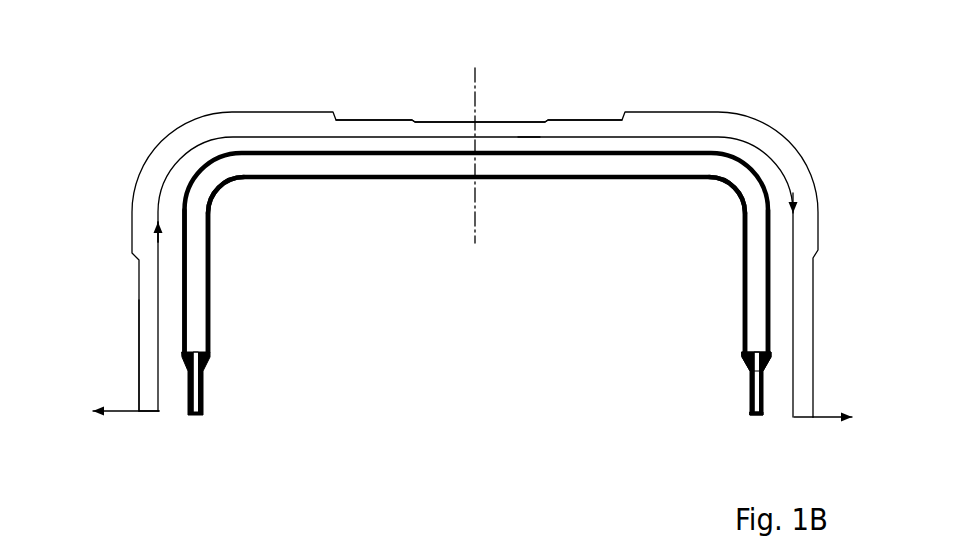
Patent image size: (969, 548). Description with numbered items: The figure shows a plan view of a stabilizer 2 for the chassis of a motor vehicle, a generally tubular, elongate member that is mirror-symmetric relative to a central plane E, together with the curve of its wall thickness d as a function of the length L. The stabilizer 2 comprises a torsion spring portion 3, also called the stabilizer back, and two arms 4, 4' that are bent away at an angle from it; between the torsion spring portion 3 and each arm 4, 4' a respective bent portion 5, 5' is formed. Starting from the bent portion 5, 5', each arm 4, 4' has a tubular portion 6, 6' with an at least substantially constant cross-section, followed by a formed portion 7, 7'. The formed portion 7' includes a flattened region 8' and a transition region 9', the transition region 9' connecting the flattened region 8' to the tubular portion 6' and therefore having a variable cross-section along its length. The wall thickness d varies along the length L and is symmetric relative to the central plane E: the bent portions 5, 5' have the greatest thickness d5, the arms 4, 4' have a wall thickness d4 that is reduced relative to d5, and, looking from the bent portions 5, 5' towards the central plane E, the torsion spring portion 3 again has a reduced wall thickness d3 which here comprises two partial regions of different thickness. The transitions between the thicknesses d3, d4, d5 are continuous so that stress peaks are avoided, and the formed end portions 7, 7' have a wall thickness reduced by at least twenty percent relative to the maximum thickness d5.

The stabilizer 2 is at (383, 62).
The torsion spring portion 3 is at (500, 182).
The arm 4 is at (238, 282).
The arm 4' is at (708, 282).
The bent portion 5 is at (238, 210).
The bent portion 5' is at (710, 219).
The tubular portion 6 is at (220, 281).
The tubular portion 6' is at (719, 281).
The formed portion 7 is at (225, 383).
The formed portion 7' is at (718, 383).
The flattened region 8' is at (713, 430).
The transition region 9' is at (719, 366).
The wall thickness d is at (472, 439).
The wall thickness of the torsion spring portion d3 is at (400, 113).
The wall thickness of the arms d4 is at (139, 326).
The wall thickness of the bent portions d5 is at (158, 142).
The central plane E is at (475, 78).
The length L is at (165, 250).